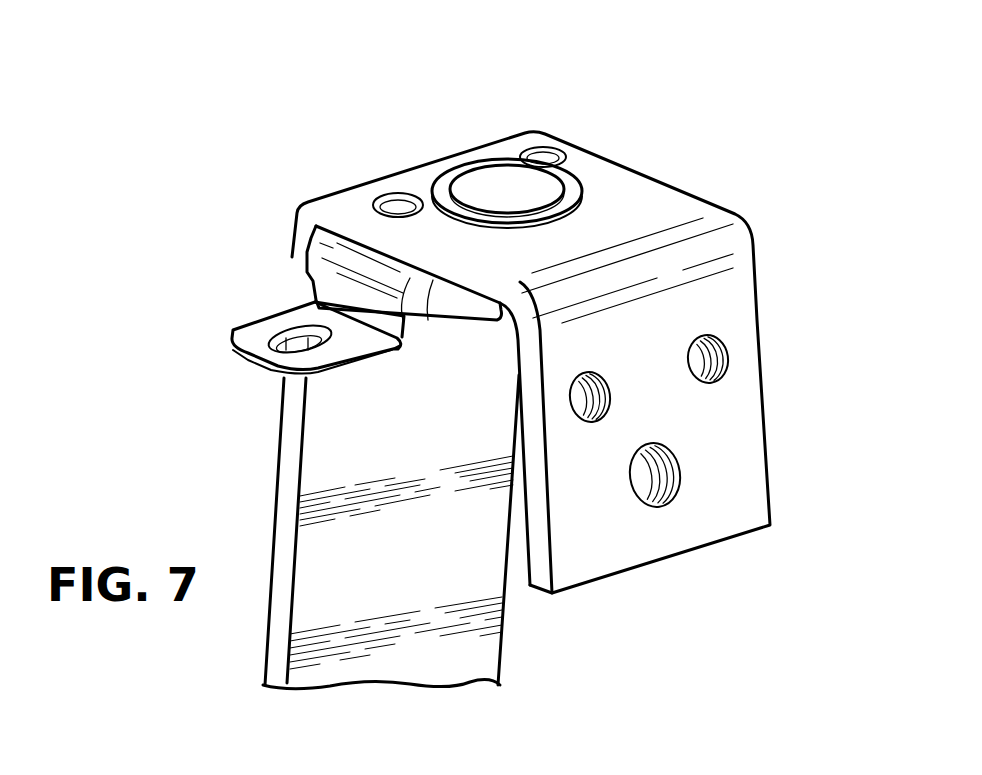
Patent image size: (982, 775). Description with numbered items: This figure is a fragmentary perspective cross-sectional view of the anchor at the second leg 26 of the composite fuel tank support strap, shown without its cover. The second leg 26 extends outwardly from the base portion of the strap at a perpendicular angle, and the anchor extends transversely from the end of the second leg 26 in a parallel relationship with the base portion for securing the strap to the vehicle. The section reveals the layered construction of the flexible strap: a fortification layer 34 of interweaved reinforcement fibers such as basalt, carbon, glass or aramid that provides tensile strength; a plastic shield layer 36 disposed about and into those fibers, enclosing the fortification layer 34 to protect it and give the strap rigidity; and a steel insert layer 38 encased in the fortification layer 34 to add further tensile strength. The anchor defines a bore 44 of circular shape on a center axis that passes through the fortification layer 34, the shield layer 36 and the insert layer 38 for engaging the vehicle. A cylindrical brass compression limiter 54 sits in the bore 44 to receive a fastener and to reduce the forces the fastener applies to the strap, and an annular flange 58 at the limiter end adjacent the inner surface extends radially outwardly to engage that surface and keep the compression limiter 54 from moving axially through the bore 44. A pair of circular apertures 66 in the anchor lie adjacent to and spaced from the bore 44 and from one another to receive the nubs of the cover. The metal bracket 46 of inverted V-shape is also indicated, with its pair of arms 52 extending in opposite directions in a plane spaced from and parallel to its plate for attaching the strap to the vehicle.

The second leg 26 is at (478, 657).
The fortification layer 34 is at (723, 377).
The shield layer 36 is at (725, 365).
The insert layer 38 is at (725, 352).
The bore 44 is at (555, 212).
The bracket 46 is at (293, 335).
The arms 52 is at (243, 357).
The compression limiter 54 is at (483, 187).
The annular flange 58 is at (567, 178).
The apertures 66 is at (403, 207).